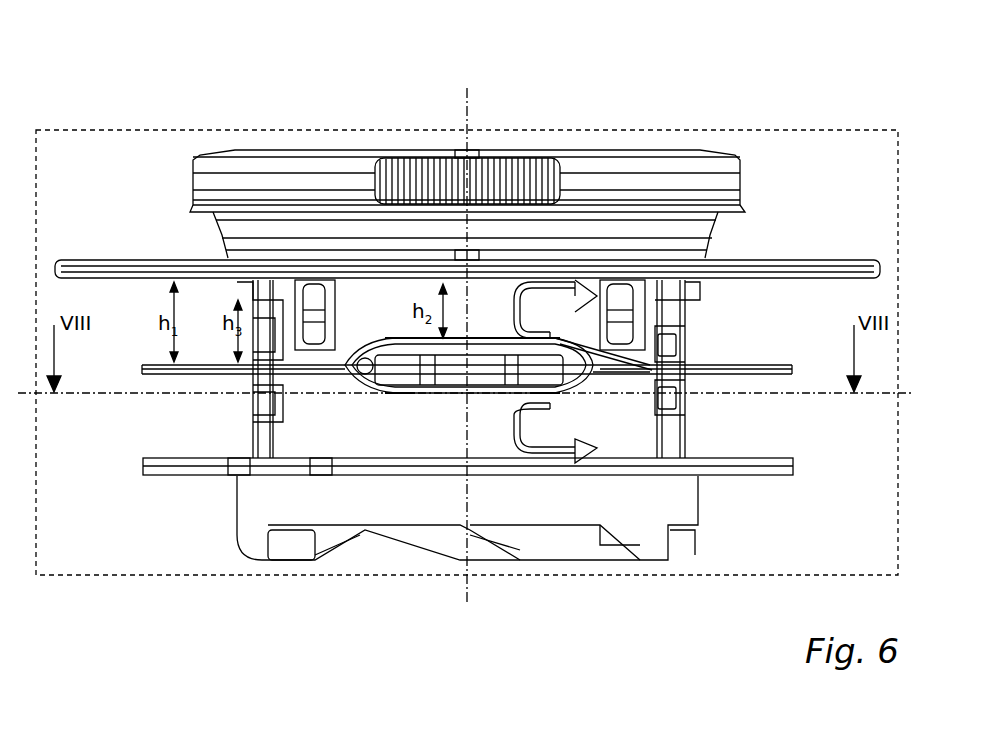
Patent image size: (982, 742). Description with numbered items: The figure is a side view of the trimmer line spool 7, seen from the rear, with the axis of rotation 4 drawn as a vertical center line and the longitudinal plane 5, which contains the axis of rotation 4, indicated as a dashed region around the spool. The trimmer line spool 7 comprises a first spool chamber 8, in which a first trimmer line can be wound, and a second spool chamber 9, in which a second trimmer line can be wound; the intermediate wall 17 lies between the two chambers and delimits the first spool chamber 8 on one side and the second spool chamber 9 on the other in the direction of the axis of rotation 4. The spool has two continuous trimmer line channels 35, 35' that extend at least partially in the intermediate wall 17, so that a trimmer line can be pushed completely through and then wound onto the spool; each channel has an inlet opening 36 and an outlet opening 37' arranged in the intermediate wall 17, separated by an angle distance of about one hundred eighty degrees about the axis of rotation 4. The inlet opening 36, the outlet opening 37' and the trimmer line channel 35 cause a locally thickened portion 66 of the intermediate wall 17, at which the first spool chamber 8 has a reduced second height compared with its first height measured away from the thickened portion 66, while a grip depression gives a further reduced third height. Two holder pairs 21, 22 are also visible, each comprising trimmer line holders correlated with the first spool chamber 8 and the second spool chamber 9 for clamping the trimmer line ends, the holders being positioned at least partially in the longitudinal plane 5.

The trimmer line spool 7 is at (158, 80).
The axis of rotation 4 is at (468, 104).
The longitudinal plane 5 is at (784, 130).
The intermediate wall 17 is at (180, 376).
The first holder pair 21 is at (243, 300).
The second holder pair 22 is at (688, 345).
The inlet opening 36 is at (390, 340).
The outlet opening 37' is at (583, 215).
The trimmer line channel 35 is at (396, 506).
The second trimmer line channel 35' is at (551, 507).
The thickened portion 66 is at (450, 398).
The first spool chamber 8 is at (720, 330).
The second spool chamber 9 is at (720, 435).